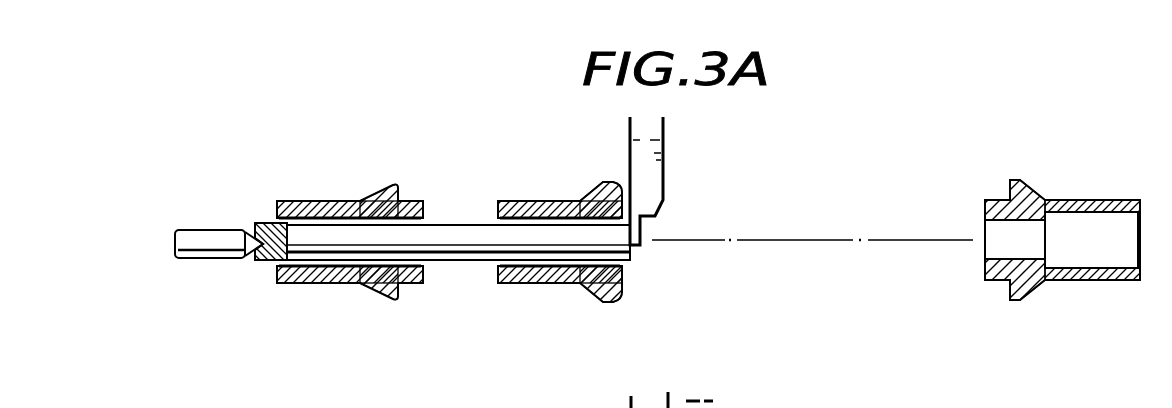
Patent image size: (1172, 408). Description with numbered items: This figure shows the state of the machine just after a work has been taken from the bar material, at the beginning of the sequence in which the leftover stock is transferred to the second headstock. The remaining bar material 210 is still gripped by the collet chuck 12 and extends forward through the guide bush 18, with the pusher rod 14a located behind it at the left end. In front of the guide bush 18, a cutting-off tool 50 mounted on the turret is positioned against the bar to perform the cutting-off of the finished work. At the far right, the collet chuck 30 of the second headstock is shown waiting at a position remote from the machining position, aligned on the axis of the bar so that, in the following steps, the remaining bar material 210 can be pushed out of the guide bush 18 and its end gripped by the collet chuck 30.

The pusher rod 14a is at (218, 230).
The collet chuck 12 is at (360, 201).
The remaining bar material 210 is at (455, 233).
The guide bush 18 is at (538, 201).
The cutting-off tool 50 is at (653, 188).
The collet chuck 30 is at (1010, 190).